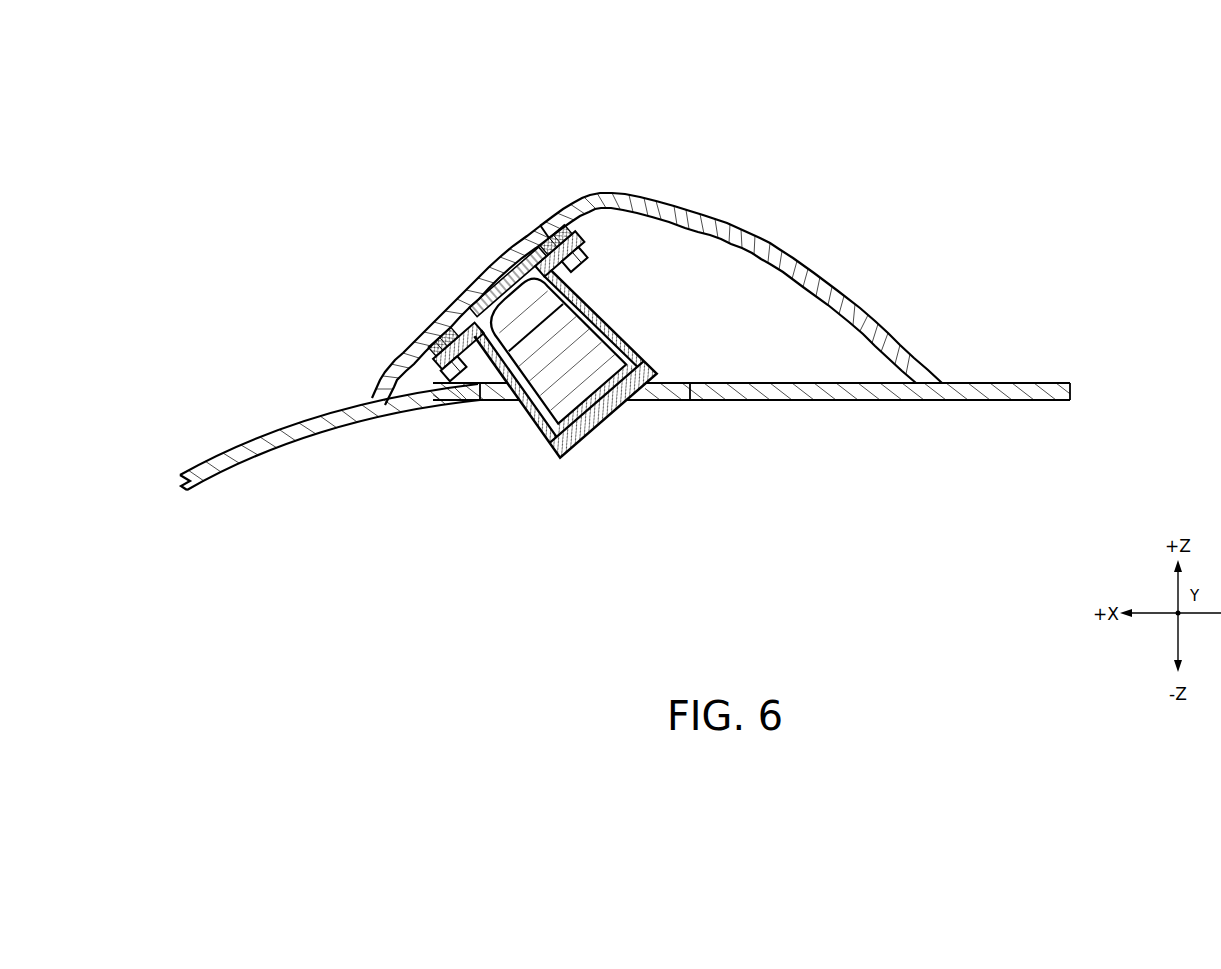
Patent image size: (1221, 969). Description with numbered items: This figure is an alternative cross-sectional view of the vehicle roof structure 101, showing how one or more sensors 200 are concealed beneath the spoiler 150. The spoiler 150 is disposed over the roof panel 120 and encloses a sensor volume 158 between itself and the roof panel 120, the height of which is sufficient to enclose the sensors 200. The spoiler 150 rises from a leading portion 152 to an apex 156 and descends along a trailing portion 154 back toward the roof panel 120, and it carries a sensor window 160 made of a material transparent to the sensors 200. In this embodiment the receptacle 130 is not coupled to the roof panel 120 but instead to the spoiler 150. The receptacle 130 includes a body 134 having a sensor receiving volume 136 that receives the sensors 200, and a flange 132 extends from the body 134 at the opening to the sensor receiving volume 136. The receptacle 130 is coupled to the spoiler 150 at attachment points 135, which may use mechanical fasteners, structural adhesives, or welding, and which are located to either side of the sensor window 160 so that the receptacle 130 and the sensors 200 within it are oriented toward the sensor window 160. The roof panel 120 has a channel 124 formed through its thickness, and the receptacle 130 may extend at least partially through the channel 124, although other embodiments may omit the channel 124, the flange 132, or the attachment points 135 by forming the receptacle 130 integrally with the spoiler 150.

The vehicle roof structure 101 is at (312, 256).
The roof panel 120 is at (1031, 383).
The channel 124 is at (670, 404).
The receptacle 130 is at (522, 487).
The flange 132 is at (447, 385).
The body 134 is at (553, 450).
The attachment points 135 is at (447, 352).
The sensor receiving volume 136 is at (481, 329).
The spoiler 150 is at (538, 112).
The leading portion 152 is at (385, 400).
The trailing portion 154 is at (876, 320).
The apex 156 is at (593, 194).
The sensor volume 158 is at (759, 290).
The sensor window 160 is at (527, 238).
The sensors 200 is at (517, 283).